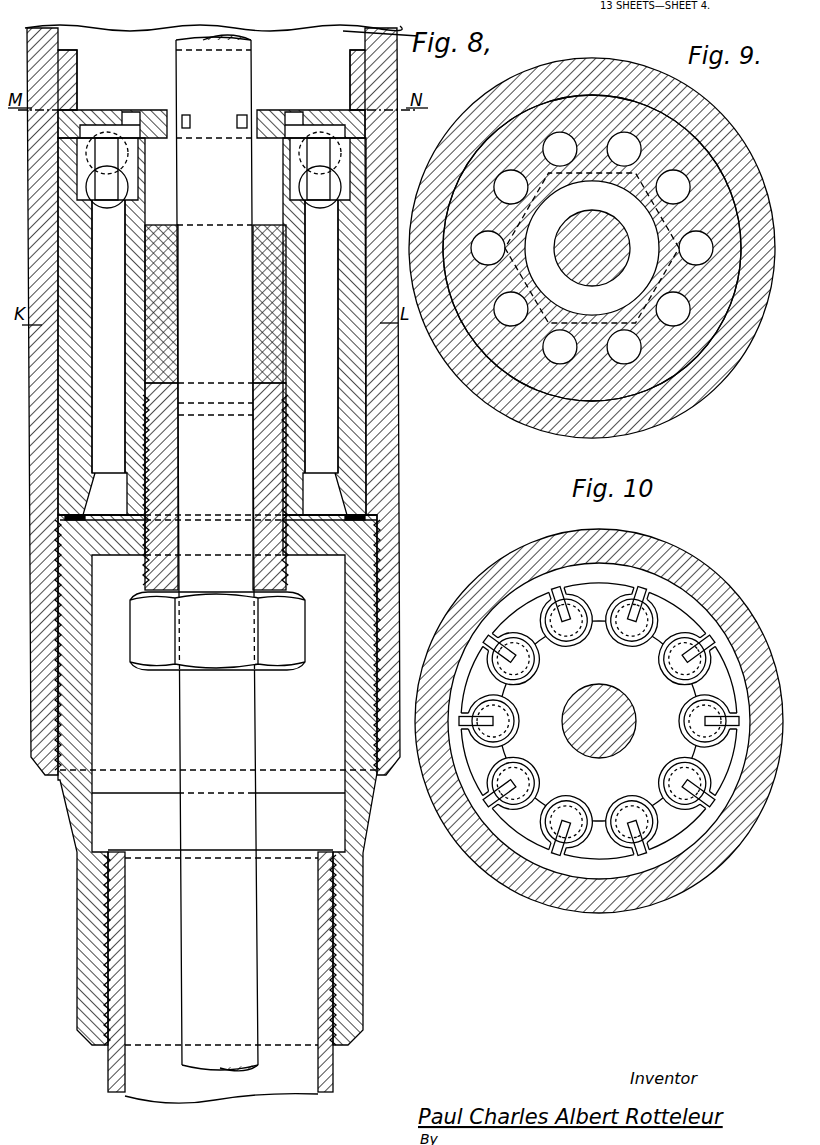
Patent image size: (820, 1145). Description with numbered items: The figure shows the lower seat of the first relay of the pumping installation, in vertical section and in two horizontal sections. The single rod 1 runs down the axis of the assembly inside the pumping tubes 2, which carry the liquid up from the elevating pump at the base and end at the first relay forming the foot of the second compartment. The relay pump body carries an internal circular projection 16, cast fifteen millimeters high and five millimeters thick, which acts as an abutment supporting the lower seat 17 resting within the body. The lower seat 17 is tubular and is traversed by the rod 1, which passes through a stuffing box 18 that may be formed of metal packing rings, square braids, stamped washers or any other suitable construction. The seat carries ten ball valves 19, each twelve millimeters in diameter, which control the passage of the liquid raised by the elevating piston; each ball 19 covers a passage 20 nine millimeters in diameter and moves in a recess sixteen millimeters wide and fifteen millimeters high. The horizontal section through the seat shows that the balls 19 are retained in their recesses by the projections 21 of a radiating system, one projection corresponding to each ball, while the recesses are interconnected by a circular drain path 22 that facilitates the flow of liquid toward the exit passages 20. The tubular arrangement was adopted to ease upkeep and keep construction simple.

In FIG. 8, the rod 1 is at (218, 553).
In FIG. 9, the rod 1 is at (592, 248).
In FIG. 10, the rod 1 is at (599, 721).
In FIG. 8, the pumping tubes 2 is at (106, 1076).
In FIG. 8, the circular projection 16 is at (70, 85).
In FIG. 8, the lower seat 17 is at (170, 197).
In FIG. 10, the lower seat 17 is at (599, 721).
In FIG. 8, the stuffing box 18 is at (262, 353).
In FIG. 8, the ball valves 19 is at (213, 170).
In FIG. 10, the ball valves 19 is at (601, 742).
In FIG. 8, the passage 20 is at (215, 336).
In FIG. 9, the passage 20 is at (592, 248).
In FIG. 8, the projections 21 is at (118, 118).
In FIG. 10, the projections 21 is at (599, 720).
In FIG. 10, the circular drain path 22 is at (596, 721).